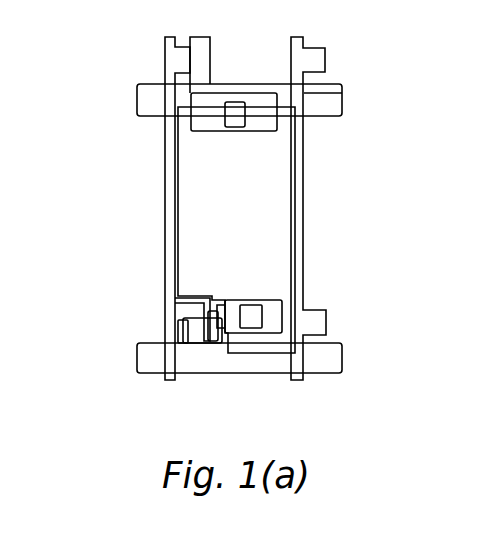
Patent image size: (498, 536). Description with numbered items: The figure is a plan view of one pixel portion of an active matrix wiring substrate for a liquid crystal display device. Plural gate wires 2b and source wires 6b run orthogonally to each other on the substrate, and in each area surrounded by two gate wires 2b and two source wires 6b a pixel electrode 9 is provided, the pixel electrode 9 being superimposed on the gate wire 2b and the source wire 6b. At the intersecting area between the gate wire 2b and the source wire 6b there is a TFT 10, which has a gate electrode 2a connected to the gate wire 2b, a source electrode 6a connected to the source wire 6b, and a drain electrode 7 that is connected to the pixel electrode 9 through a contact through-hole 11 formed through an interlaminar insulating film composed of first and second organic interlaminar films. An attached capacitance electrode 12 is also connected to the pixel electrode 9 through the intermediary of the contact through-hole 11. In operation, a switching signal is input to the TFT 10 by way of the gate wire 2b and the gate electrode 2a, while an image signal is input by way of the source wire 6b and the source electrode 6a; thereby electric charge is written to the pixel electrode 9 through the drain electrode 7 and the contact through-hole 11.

The pixel electrode 9 is at (177, 212).
The attached capacitance electrode 12 is at (285, 127).
The source wire 6b is at (305, 183).
The gate electrode 2a is at (170, 290).
The TFT 10 is at (170, 313).
The contact through-hole 11 is at (266, 314).
The drain electrode 7 is at (241, 339).
The gate wire 2b is at (346, 357).
The source electrode 6a is at (182, 348).